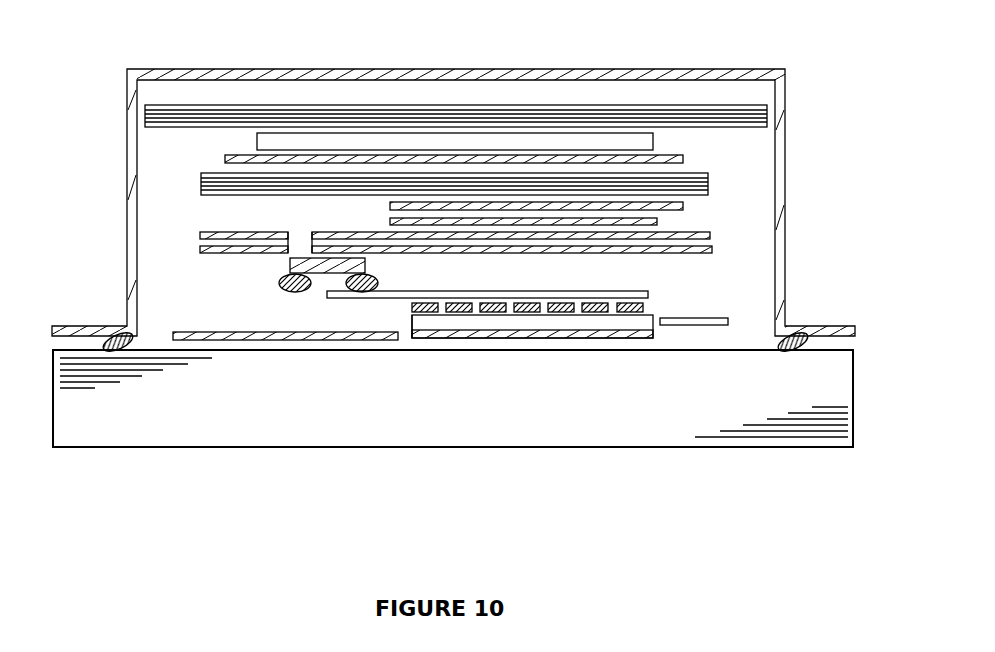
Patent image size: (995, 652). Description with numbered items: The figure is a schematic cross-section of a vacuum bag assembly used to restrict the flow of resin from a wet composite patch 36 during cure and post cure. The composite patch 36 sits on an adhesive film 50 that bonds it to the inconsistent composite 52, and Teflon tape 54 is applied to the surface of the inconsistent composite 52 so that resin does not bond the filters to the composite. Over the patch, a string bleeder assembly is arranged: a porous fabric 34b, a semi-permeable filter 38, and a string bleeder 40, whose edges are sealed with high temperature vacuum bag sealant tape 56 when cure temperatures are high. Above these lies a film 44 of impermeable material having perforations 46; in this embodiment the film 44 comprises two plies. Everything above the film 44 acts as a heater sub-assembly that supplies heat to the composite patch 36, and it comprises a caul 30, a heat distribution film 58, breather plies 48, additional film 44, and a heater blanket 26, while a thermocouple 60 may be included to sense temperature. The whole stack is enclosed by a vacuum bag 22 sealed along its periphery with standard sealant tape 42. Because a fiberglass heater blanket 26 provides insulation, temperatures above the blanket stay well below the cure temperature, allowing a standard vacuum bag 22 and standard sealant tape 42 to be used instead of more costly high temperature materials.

The vacuum bag 22 is at (471, 69).
The heater blanket 26 is at (262, 143).
The caul 30 is at (657, 222).
The porous fabric 34b is at (643, 307).
The composite patch 36 is at (412, 325).
The semi-permeable filter 38 is at (290, 268).
The string bleeder 40 is at (483, 298).
The sealant tape 42 is at (109, 334).
The film 44 is at (683, 159).
The perforations 46 is at (300, 240).
The breather plies 48 is at (745, 127).
The adhesive film 50 is at (560, 340).
The inconsistent composite 52 is at (420, 447).
The Teflon tape 54 is at (306, 343).
The high temperature vacuum bag sealant tape 56 is at (350, 291).
The heat distribution film 58 is at (390, 206).
The thermocouple 60 is at (728, 322).